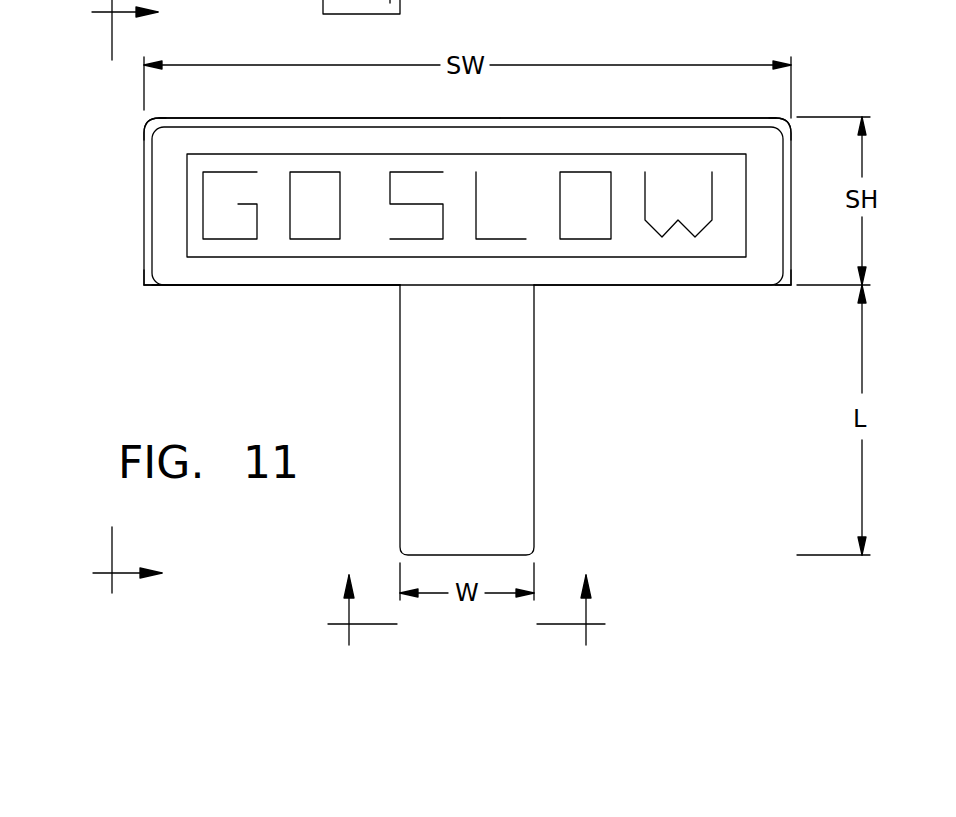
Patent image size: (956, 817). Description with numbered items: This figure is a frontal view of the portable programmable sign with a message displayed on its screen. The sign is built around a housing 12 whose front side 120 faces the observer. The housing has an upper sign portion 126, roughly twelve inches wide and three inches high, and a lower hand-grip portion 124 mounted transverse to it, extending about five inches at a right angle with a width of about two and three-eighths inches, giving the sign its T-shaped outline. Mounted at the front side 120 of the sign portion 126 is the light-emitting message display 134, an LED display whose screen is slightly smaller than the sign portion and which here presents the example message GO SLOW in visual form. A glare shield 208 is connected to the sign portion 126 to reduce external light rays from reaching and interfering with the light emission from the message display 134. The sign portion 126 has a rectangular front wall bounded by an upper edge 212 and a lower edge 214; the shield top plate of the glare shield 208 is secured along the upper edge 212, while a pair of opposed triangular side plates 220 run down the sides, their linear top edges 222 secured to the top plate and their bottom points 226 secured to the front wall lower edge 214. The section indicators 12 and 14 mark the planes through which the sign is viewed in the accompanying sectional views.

The housing 12 is at (105, 297).
The section line 14- 14 is at (474, 630).
The front side 120 is at (690, 274).
The lower hand-grip portion 124 is at (510, 435).
The upper sign portion 126 is at (144, 176).
The light-emitting message display 134 is at (365, 186).
The glare shield 208 is at (613, 120).
The front wall upper edge 212 is at (300, 122).
The front wall lower edge 214 is at (250, 285).
The triangular side plates 220 is at (147, 243).
The side plate linear top edges 222 is at (148, 123).
The side plate bottom points 226 is at (143, 285).